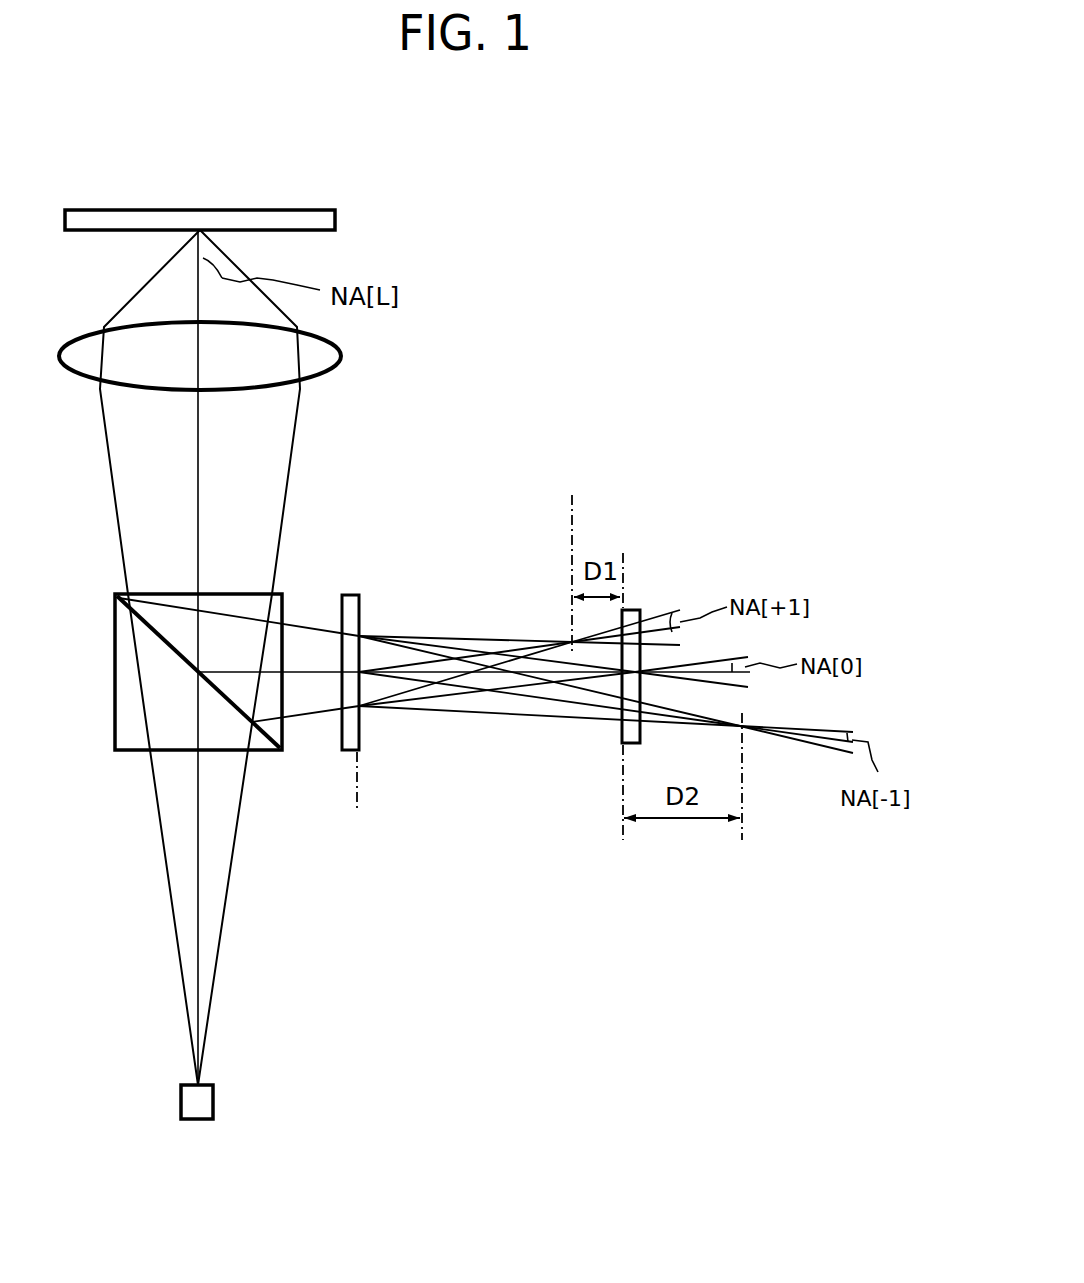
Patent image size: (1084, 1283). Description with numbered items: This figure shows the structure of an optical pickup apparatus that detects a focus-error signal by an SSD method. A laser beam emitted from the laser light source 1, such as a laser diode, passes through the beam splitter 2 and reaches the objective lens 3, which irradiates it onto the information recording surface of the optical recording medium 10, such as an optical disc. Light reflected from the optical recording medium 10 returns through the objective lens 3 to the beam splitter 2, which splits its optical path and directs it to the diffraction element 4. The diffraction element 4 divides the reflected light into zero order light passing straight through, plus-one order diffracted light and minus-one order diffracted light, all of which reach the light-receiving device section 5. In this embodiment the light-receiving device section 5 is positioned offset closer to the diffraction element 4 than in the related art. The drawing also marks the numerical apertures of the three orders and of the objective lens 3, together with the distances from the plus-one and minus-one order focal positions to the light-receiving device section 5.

The laser light source 1 is at (214, 1102).
The beam splitter 2 is at (258, 752).
The objective lens 3 is at (343, 353).
The diffraction element 4 is at (352, 593).
The light-receiving device section 5 is at (638, 607).
The optical recording medium 10 is at (338, 218).